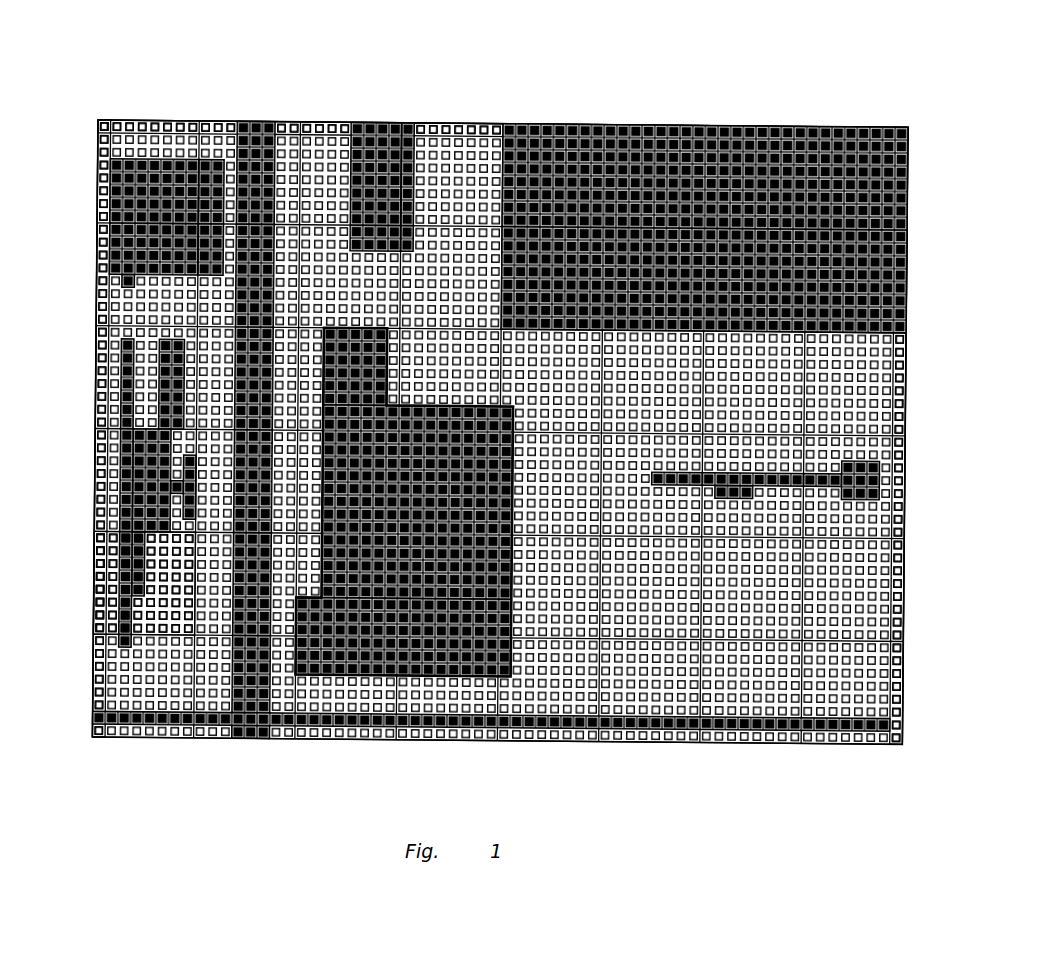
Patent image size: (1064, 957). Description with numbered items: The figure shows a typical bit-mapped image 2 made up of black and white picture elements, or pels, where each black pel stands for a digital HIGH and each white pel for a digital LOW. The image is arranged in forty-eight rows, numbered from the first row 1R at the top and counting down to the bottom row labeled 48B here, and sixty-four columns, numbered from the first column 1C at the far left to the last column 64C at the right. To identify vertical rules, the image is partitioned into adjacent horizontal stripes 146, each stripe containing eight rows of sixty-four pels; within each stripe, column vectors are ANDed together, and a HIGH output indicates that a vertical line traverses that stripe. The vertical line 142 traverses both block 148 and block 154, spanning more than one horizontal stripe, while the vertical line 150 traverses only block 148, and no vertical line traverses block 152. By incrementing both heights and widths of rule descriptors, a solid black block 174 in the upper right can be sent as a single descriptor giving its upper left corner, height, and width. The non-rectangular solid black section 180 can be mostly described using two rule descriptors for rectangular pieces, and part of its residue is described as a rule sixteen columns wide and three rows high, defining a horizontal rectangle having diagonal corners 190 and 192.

The bit-mapped image 2 is at (973, 106).
The first row 1R is at (97, 128).
The first column 1C is at (105, 125).
The sixty-fourth column 64C is at (902, 127).
The forty-eighth row 48B is at (95, 727).
The solid black block 174 is at (663, 125).
The horizontal stripe 146 is at (908, 182).
The block 152 is at (95, 392).
The vertical line 150 is at (138, 445).
The block 148 is at (95, 462).
The vertical line 142 is at (125, 508).
The block 154 is at (95, 585).
The solid black section 180 is at (422, 672).
The diagonal corner 190 is at (288, 679).
The diagonal corner 192 is at (491, 672).